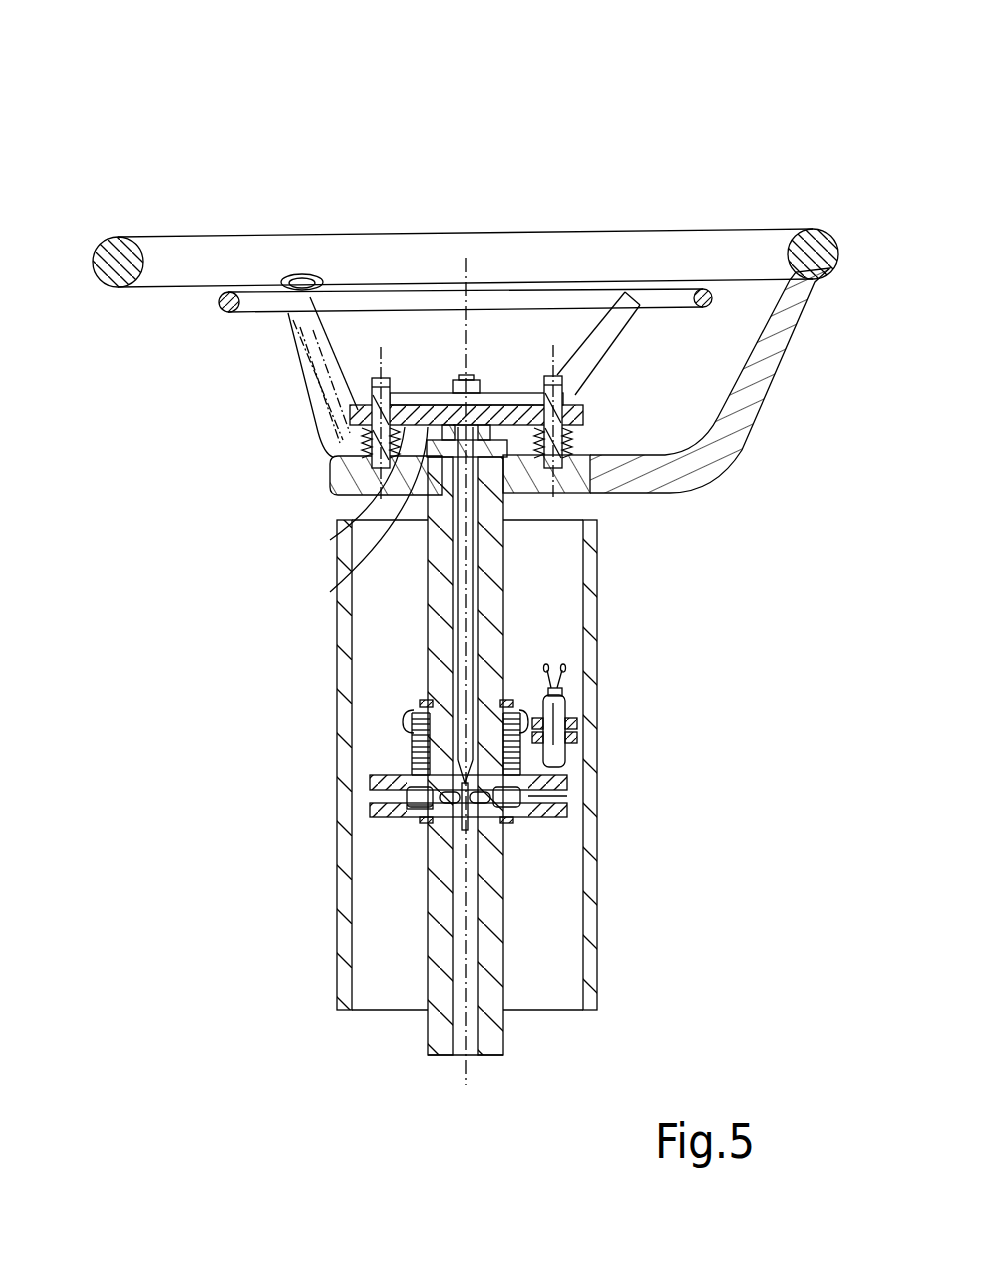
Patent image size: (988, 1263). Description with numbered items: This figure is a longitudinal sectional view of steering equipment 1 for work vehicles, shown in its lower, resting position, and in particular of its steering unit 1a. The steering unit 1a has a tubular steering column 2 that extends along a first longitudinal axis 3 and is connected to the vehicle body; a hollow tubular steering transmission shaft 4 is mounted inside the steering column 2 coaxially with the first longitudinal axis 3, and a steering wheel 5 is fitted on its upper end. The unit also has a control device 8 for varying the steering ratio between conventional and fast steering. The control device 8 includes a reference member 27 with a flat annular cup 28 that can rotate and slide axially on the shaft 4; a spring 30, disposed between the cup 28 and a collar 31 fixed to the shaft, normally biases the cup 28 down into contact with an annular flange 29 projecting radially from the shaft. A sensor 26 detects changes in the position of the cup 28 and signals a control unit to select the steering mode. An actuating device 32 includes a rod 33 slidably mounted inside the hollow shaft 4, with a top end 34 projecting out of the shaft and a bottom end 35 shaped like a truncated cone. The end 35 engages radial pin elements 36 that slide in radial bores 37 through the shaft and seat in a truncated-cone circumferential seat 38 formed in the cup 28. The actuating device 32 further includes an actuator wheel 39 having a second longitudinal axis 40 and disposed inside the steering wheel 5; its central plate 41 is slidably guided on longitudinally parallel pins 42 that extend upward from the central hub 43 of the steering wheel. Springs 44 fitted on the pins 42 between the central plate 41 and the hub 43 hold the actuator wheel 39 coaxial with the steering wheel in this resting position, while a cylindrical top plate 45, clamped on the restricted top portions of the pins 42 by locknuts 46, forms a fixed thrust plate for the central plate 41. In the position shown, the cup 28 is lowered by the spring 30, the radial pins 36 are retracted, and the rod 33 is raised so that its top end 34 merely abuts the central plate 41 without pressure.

The steering equipment 1 is at (735, 153).
The steering unit 1a is at (633, 157).
The tubular steering column 2 is at (592, 623).
The first longitudinal axis 3 is at (472, 272).
The tubular steering transmission shaft 4 is at (437, 1033).
The steering wheel 5 is at (172, 252).
The control device 8 is at (683, 360).
The sensor 26 is at (565, 706).
The reference member 27 is at (568, 796).
The flat annular cup 28 is at (548, 782).
The annular flange 29 is at (370, 811).
The spring 30 is at (578, 741).
The collar 31 is at (555, 689).
The actuating device 32 is at (482, 557).
The rod 33 is at (470, 590).
The top end 34 is at (482, 403).
The truncated cone-shaped end 35 is at (458, 784).
The radial pin elements 36 is at (420, 795).
The radial bores 37 is at (446, 805).
The circumferential seat 38 is at (408, 802).
The actuator wheel 39 is at (563, 290).
The second longitudinal axis 40 is at (472, 270).
The central plate 41 is at (418, 486).
The longitudinally parallel pins 42 is at (345, 472).
The central hub 43 is at (417, 494).
The springs 44 is at (366, 445).
The cylindrical top plate 45 is at (432, 400).
The locknuts 46 is at (476, 388).